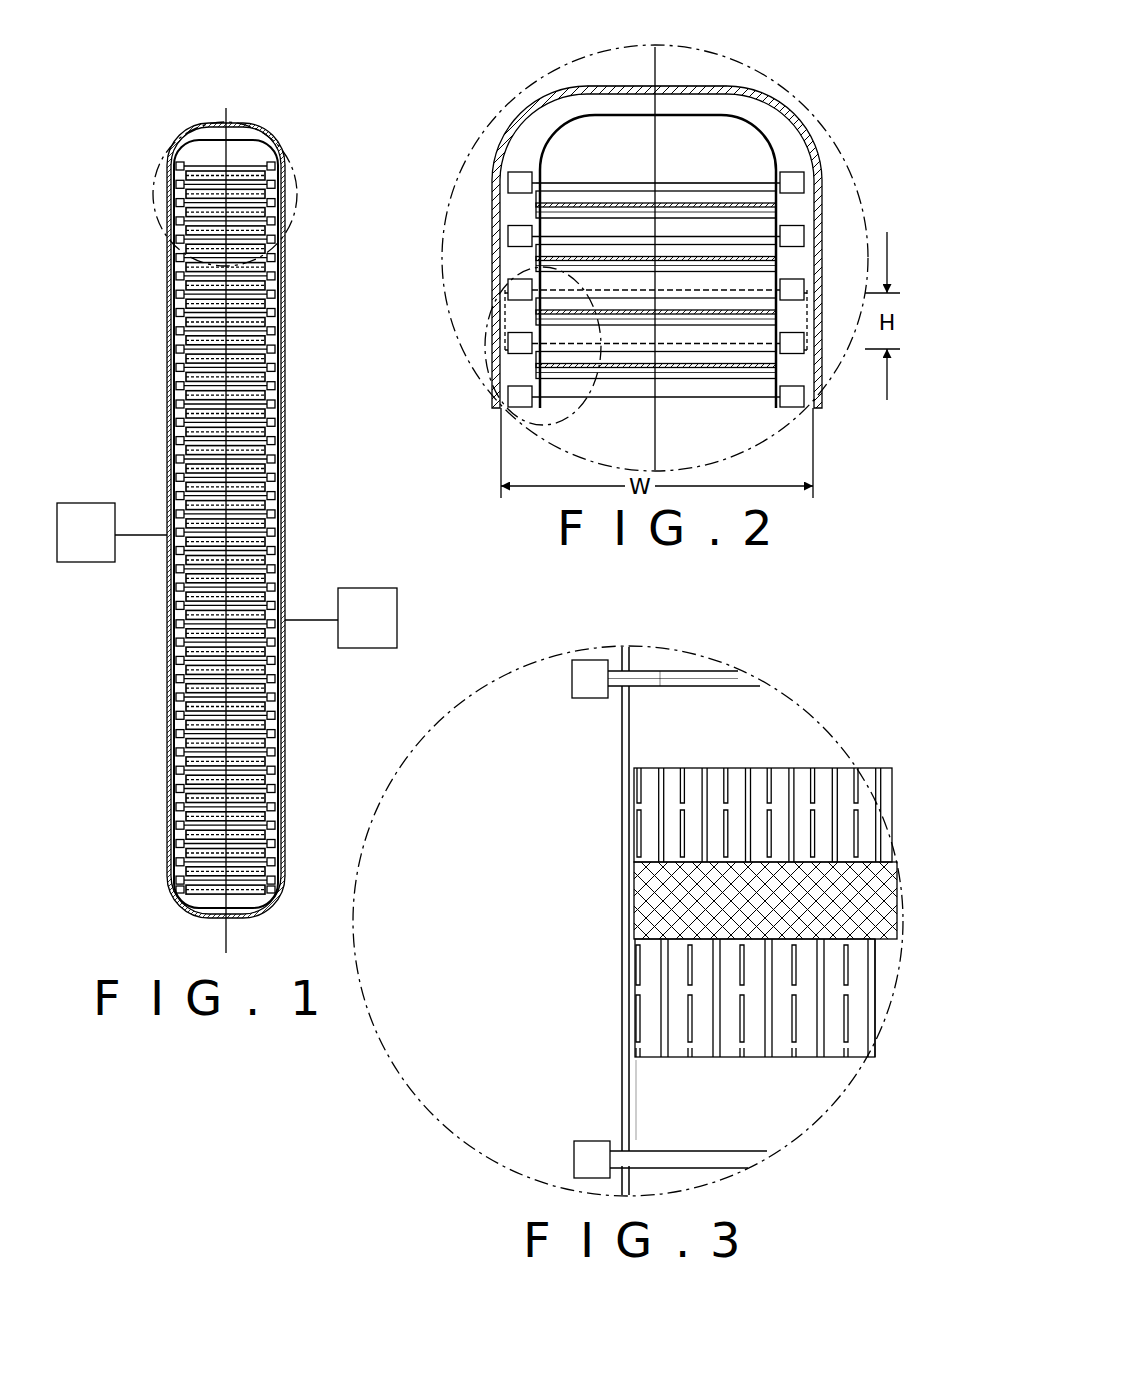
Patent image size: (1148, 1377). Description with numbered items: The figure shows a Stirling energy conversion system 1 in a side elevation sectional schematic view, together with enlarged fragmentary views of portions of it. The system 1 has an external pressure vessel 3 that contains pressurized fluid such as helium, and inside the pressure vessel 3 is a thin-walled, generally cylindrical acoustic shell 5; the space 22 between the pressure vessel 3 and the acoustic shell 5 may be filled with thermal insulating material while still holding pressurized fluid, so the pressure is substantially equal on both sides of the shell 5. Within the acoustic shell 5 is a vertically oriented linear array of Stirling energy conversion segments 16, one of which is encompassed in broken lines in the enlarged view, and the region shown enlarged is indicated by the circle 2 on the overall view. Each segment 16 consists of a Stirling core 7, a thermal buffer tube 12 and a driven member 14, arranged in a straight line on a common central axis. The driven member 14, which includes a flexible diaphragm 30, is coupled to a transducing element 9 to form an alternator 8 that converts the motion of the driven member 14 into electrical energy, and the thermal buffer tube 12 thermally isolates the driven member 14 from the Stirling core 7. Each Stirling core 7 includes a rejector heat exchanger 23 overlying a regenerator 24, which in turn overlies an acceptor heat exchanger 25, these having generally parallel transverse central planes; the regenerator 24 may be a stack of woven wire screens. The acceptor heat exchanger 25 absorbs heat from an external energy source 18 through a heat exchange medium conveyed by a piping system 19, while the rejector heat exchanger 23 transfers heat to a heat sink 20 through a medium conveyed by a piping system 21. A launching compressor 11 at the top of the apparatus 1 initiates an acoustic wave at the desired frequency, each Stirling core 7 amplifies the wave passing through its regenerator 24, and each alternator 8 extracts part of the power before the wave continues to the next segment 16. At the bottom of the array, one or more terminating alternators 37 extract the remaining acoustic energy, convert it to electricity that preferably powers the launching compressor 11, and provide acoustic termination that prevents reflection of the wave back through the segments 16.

In FIG. 1, the Stirling energy conversion system 1 is at (208, 520).
In FIG. 2, the Stirling energy conversion system 1 is at (639, 235).
In FIG. 3, the Stirling energy conversion system 1 is at (654, 897).
In FIG. 1, the detail region shown in FIG. 2 is at (300, 190).
In FIG. 1, the pressure vessel 3 is at (166, 452).
In FIG. 2, the pressure vessel 3 is at (694, 82).
In FIG. 1, the acoustic shell 5 is at (250, 148).
In FIG. 2, the acoustic shell 5 is at (758, 142).
In FIG. 3, the acoustic shell 5 is at (620, 790).
In FIG. 2, the Stirling core 7 is at (580, 257).
In FIG. 3, the Stirling core 7 is at (794, 913).
In FIG. 2, the alternator 8 is at (810, 236).
In FIG. 3, the alternator 8 is at (681, 670).
In FIG. 3, the transducing element 9 is at (572, 679).
In FIG. 2, the launching compressor 11 is at (590, 182).
In FIG. 2, the thermal buffer tube 12 is at (560, 271).
In FIG. 3, the thermal buffer tube 12 is at (672, 1093).
In FIG. 2, the driven member 14 is at (536, 290).
In FIG. 3, the driven member 14 is at (648, 670).
In FIG. 2, the Stirling energy conversion segment 16 is at (504, 319).
In FIG. 1, the energy source 18 is at (397, 620).
In FIG. 1, the piping system 19 is at (306, 604).
In FIG. 1, the heat sink 20 is at (57, 562).
In FIG. 1, the piping system 21 is at (147, 537).
In FIG. 2, the space 22 is at (565, 125).
In FIG. 2, the rejector heat exchanger 23 is at (508, 196).
In FIG. 3, the rejector heat exchanger 23 is at (812, 796).
In FIG. 2, the regenerator 24 is at (536, 205).
In FIG. 3, the regenerator 24 is at (865, 886).
In FIG. 2, the acceptor heat exchanger 25 is at (555, 229).
In FIG. 3, the acceptor heat exchanger 25 is at (774, 1021).
In FIG. 3, the diaphragm 30 is at (700, 672).
In FIG. 1, the terminating alternator 37 is at (208, 892).